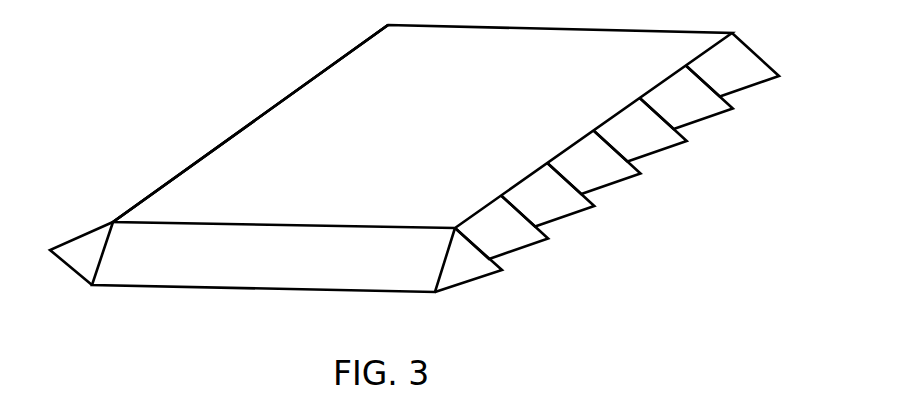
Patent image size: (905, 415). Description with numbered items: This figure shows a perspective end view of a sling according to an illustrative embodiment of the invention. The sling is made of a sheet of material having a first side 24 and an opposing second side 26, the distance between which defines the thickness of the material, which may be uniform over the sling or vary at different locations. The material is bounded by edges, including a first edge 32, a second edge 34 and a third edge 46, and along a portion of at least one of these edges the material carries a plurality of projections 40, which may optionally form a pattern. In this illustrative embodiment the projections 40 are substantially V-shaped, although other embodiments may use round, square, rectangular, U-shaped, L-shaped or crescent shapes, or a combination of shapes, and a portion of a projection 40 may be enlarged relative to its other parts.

The first side 24 is at (355, 74).
The second side 26 is at (251, 151).
The first edge 32 is at (160, 186).
The second edge 34 is at (517, 252).
The projections 40 is at (662, 155).
The third edge 46 is at (248, 280).